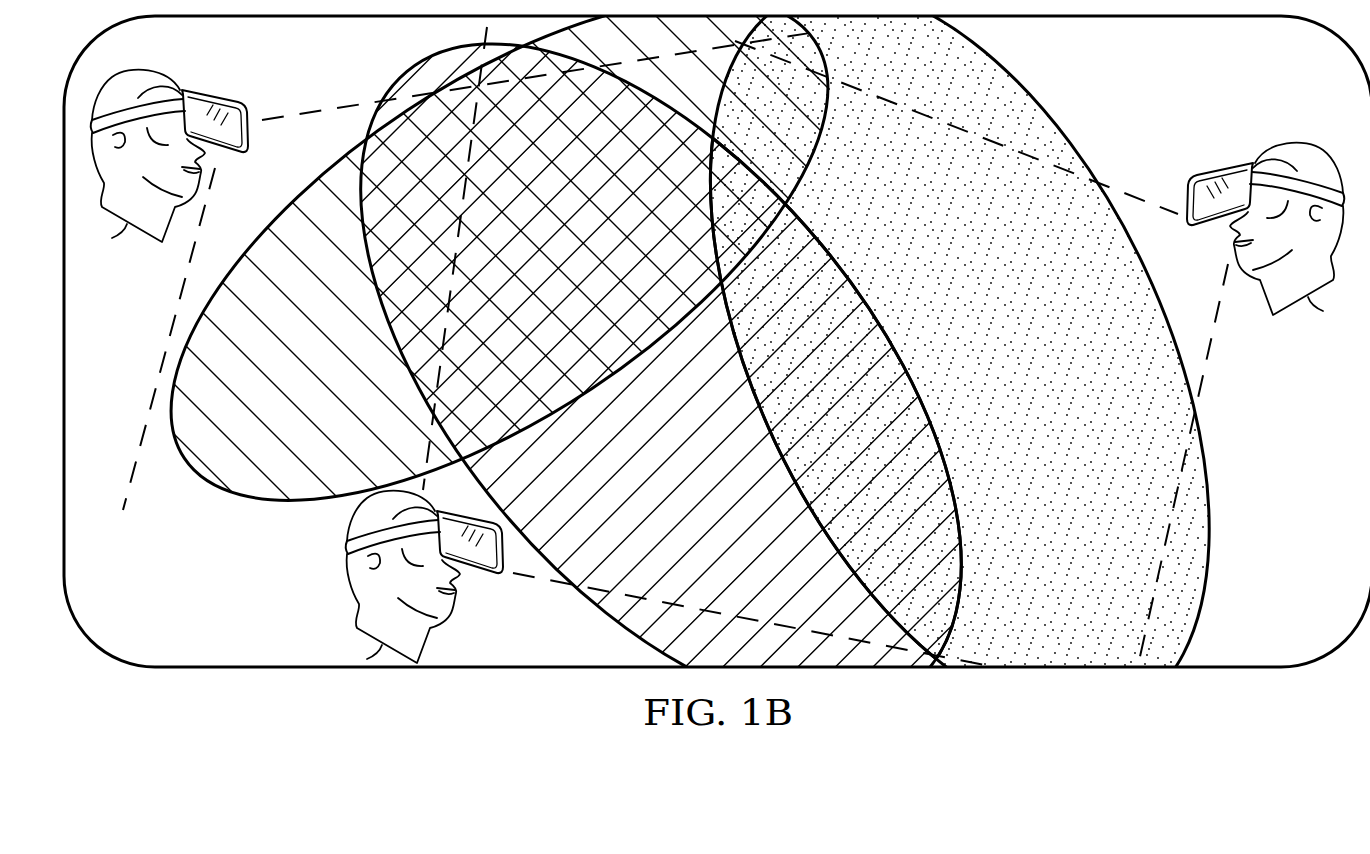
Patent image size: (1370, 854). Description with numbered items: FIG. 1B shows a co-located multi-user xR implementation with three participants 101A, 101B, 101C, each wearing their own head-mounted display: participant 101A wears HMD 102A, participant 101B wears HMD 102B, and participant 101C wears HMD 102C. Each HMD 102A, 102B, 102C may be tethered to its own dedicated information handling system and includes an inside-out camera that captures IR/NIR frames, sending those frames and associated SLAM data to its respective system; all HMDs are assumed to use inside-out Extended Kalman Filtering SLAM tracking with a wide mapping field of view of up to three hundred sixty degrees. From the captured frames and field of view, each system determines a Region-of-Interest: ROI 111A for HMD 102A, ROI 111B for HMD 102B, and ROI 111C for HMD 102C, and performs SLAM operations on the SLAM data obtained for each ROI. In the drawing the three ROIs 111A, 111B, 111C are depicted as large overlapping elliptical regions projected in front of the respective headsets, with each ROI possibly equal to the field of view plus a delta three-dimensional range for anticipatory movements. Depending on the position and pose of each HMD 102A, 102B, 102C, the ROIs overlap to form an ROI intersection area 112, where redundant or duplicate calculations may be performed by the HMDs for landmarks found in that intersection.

The participant 101A is at (360, 617).
The participant 101B is at (1300, 300).
The participant 101C is at (127, 227).
The HMD 102A is at (490, 577).
The HMD 102B is at (1210, 167).
The HMD 102C is at (221, 97).
The Region-of-Interest (ROI) 111A is at (389, 94).
The Region-of-Interest (ROI) 111B is at (1057, 124).
The Region-of-Interest (ROI) 111C is at (227, 497).
The ROI intersection area 112 is at (888, 340).